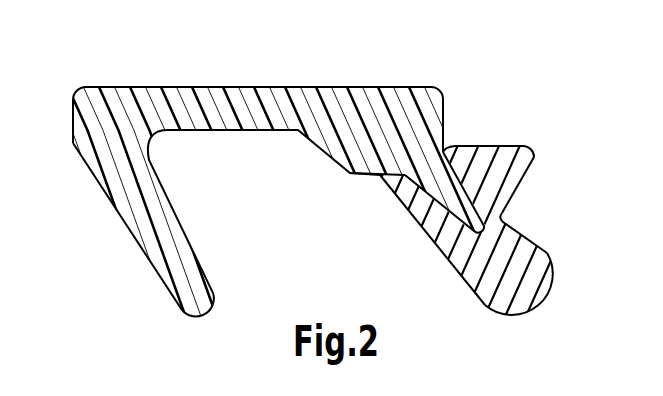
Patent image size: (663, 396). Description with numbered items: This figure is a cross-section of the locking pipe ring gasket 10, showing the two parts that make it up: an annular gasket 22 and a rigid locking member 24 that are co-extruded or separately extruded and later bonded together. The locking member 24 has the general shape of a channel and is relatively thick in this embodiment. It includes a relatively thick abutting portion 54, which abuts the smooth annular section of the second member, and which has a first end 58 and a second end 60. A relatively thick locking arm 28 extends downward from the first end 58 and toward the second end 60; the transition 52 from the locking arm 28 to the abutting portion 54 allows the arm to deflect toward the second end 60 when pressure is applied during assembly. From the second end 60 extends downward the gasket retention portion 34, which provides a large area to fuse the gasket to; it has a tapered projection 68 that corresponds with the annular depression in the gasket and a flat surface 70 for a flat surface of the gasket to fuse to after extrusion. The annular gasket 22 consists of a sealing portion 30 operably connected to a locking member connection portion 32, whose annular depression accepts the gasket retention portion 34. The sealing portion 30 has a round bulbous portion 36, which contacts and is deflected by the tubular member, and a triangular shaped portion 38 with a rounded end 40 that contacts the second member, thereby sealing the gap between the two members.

The locking pipe ring gasket 10 is at (288, 57).
The annular gasket 22 is at (550, 266).
The locking member 24 is at (212, 112).
The locking arm 28 is at (147, 225).
The sealing portion 30 is at (527, 240).
The locking member connection portion 32 is at (477, 140).
The gasket retention portion 34 is at (453, 140).
The round bulbous portion 36 is at (497, 277).
The triangular shaped portion 38 is at (520, 172).
The rounded end 40 is at (533, 147).
The transition 52 is at (107, 128).
The abutting portion 54 is at (285, 108).
The first end 58 is at (87, 87).
The second end 60 is at (432, 102).
The tapered projection 68 is at (457, 196).
The flat surface 70 is at (368, 175).